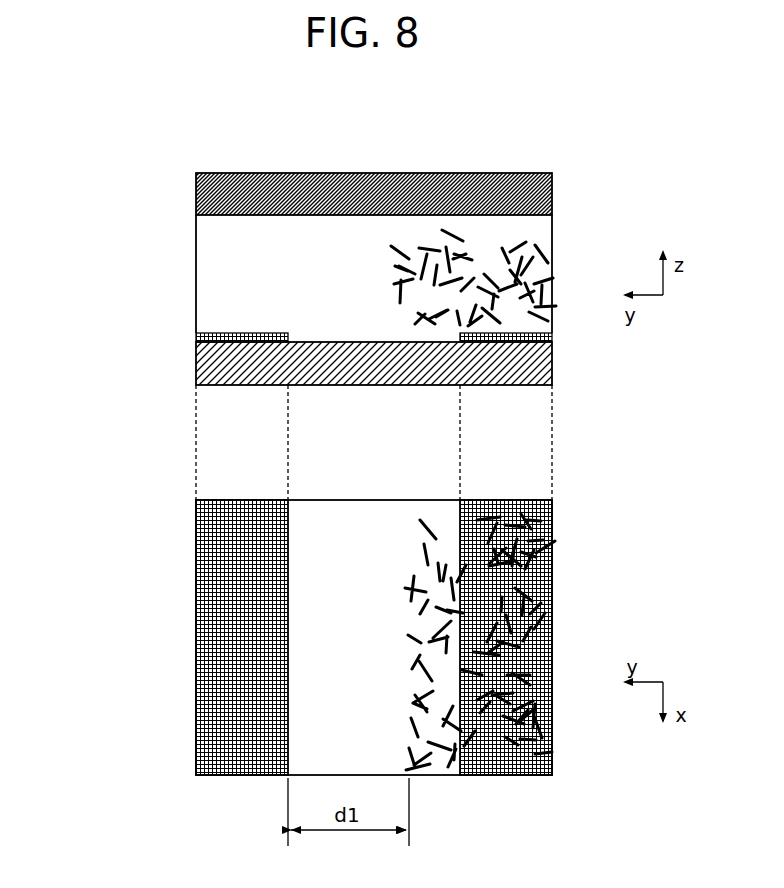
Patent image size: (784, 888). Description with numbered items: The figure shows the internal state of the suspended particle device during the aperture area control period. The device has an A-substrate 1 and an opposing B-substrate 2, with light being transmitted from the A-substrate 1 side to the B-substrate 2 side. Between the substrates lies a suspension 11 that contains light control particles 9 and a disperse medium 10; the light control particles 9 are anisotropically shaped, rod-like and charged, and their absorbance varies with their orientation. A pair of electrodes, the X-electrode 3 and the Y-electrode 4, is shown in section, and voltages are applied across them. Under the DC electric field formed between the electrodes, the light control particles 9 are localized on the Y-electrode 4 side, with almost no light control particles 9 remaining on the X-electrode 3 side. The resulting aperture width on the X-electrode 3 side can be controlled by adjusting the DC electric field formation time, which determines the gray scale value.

The A-substrate 1 is at (196, 370).
The B-substrate 2 is at (196, 193).
The X-electrode 3 is at (196, 612).
The Y-electrode 4 is at (552, 622).
The light control particles 9 is at (400, 303).
The disperse medium 10 is at (213, 297).
The suspension 11 is at (113, 215).